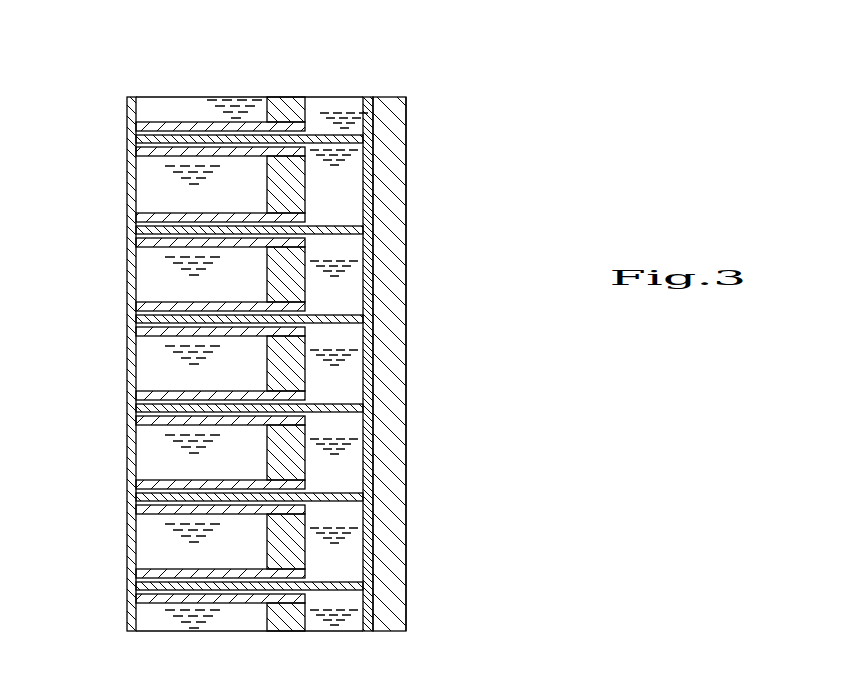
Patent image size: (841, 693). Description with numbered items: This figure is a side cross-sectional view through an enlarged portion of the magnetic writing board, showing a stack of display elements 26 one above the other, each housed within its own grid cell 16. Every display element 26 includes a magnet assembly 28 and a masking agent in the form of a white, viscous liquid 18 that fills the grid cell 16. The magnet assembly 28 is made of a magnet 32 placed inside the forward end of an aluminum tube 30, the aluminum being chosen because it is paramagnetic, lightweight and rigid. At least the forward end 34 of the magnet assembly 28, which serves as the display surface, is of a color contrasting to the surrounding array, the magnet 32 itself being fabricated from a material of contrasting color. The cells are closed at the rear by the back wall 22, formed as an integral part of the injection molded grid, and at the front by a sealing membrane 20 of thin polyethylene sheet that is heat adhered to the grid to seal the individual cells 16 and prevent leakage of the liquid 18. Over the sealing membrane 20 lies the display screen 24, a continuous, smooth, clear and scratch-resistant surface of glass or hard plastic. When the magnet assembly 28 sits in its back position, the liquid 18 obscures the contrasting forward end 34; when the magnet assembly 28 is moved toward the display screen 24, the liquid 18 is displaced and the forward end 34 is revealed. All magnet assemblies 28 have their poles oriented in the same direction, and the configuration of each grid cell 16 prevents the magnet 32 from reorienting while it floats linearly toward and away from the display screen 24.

The grid cell 16 is at (338, 114).
The viscous liquid 18 is at (156, 110).
The sealing membrane 20 is at (378, 119).
The back wall 22 is at (130, 207).
The display screen 24 is at (392, 268).
The display element 26 is at (128, 165).
The magnet assembly 28 is at (205, 127).
The aluminum tube 30 is at (138, 229).
The magnet 32 is at (307, 177).
The forward end 34 is at (307, 187).